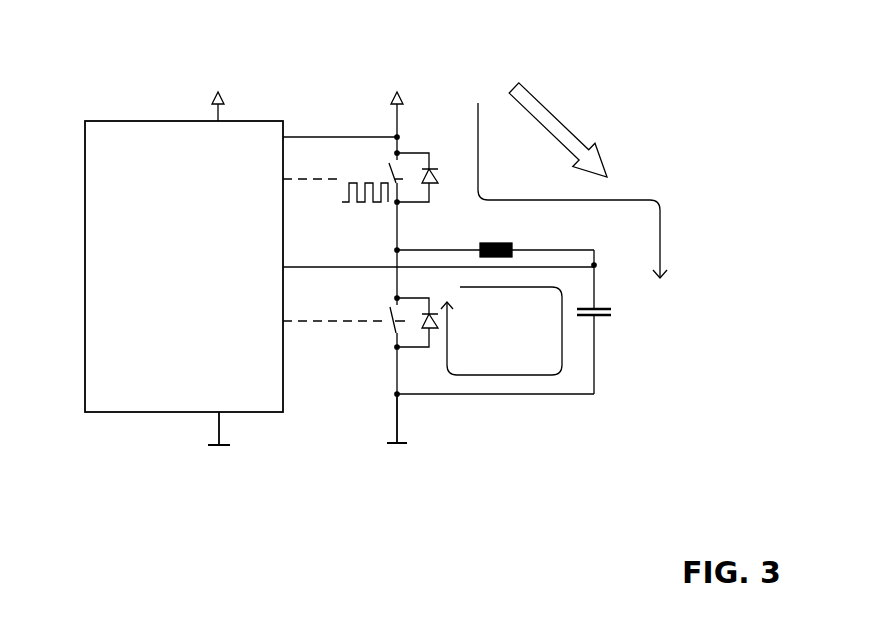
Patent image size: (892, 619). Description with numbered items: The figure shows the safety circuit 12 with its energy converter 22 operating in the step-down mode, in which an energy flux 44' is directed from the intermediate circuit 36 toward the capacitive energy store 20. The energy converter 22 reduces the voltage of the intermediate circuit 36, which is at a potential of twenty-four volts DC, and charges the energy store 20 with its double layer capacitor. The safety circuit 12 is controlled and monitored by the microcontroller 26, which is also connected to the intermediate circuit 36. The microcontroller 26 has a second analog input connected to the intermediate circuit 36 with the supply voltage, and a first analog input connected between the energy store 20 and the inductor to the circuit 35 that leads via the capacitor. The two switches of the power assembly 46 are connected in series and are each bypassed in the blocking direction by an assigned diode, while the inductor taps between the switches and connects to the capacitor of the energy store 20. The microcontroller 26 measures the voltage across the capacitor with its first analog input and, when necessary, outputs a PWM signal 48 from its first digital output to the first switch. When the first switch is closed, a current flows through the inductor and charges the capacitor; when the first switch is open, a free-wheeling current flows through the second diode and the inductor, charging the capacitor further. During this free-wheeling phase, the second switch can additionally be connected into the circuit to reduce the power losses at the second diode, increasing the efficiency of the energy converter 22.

The safety circuit 12 is at (140, 438).
The microcontroller 26 is at (179, 290).
The intermediate circuit 36 is at (400, 118).
The PWM signal 48 is at (347, 183).
The power assembly 46 is at (383, 288).
The energy converter 22 is at (438, 276).
The capacitive energy store 20 is at (582, 312).
The circuit 35 is at (594, 342).
The energy flux 44' is at (591, 111).